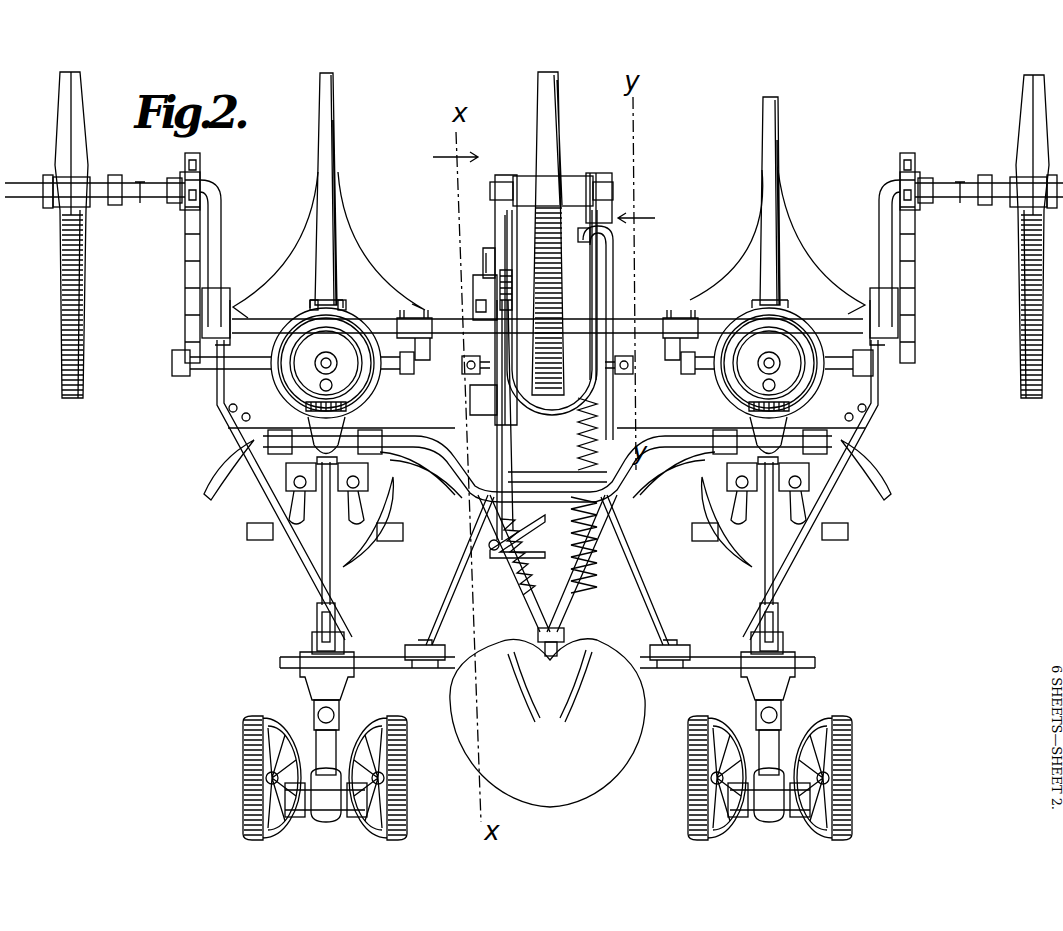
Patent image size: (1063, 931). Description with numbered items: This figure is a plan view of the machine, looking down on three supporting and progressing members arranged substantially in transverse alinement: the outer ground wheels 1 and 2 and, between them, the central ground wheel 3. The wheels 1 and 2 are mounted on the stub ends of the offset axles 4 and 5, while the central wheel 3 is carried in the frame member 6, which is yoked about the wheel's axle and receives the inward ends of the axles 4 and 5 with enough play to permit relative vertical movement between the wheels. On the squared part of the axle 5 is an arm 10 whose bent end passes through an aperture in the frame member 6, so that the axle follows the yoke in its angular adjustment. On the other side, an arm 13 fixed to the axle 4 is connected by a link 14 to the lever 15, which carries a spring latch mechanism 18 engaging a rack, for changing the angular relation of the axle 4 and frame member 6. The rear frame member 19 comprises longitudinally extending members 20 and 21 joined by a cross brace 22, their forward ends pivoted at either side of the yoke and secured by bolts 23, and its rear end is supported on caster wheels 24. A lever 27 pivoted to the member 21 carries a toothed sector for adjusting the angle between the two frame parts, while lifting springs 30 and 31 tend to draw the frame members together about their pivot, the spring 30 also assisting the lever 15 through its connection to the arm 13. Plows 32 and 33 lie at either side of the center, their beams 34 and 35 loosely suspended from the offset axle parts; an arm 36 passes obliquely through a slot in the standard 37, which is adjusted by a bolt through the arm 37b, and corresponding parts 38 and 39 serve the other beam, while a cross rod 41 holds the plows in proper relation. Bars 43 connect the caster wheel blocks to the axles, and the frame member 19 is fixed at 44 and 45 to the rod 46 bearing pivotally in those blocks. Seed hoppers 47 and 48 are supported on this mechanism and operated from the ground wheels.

The ground wheel 1 is at (84, 312).
The ground wheel 2 is at (1021, 345).
The central ground wheel 3 is at (552, 112).
The offset axle 4 is at (217, 214).
The offset axle 5 is at (884, 208).
The frame member 6 is at (552, 413).
The arm 10 is at (615, 262).
The arm 13 is at (478, 289).
The link 14 is at (486, 262).
The lever 15 is at (472, 399).
The spring latch mechanism 18 is at (515, 444).
The frame member 19 is at (547, 651).
The longitudinally extending member 20 is at (458, 542).
The longitudinally extending member 21 is at (646, 569).
The cross brace 22 is at (550, 482).
The bolts 23 is at (462, 365).
The caster wheels 24 is at (282, 722).
The lever 27 is at (592, 346).
The lifting spring 30 is at (527, 570).
The lifting spring 31 is at (571, 533).
The plow 32 is at (796, 238).
The plow 33 is at (362, 248).
The plow beam 34 is at (773, 128).
The plow beam 35 is at (333, 148).
The arm 36 is at (331, 578).
The standard 37 is at (336, 621).
The arm 37b is at (828, 641).
The arm 38 is at (764, 579).
The standard 39 is at (758, 618).
The cross rod 41 is at (627, 495).
The bars 43 is at (303, 598).
The fixing point 44 is at (421, 652).
The fixing point 45 is at (667, 662).
The rod 46 is at (395, 672).
The seed hopper 47 is at (280, 378).
The seed hopper 48 is at (815, 378).